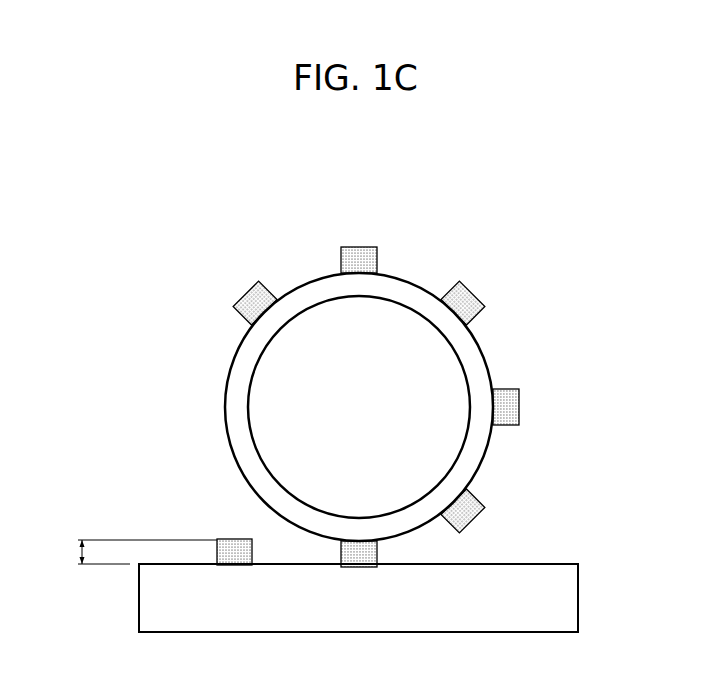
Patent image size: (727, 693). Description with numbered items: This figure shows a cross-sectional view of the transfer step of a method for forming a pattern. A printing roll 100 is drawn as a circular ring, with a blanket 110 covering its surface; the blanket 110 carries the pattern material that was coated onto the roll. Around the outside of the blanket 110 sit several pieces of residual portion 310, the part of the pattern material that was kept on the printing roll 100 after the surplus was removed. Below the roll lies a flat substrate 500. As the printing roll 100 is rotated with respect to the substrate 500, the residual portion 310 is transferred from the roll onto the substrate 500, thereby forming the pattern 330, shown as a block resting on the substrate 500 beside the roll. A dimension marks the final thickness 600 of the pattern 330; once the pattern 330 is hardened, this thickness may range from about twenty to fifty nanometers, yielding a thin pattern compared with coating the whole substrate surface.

The printing roll 100 is at (285, 388).
The blanket 110 is at (240, 430).
The residual portion 310 is at (510, 405).
The pattern 330 is at (233, 555).
The substrate 500 is at (325, 612).
The final thickness 600 is at (78, 551).